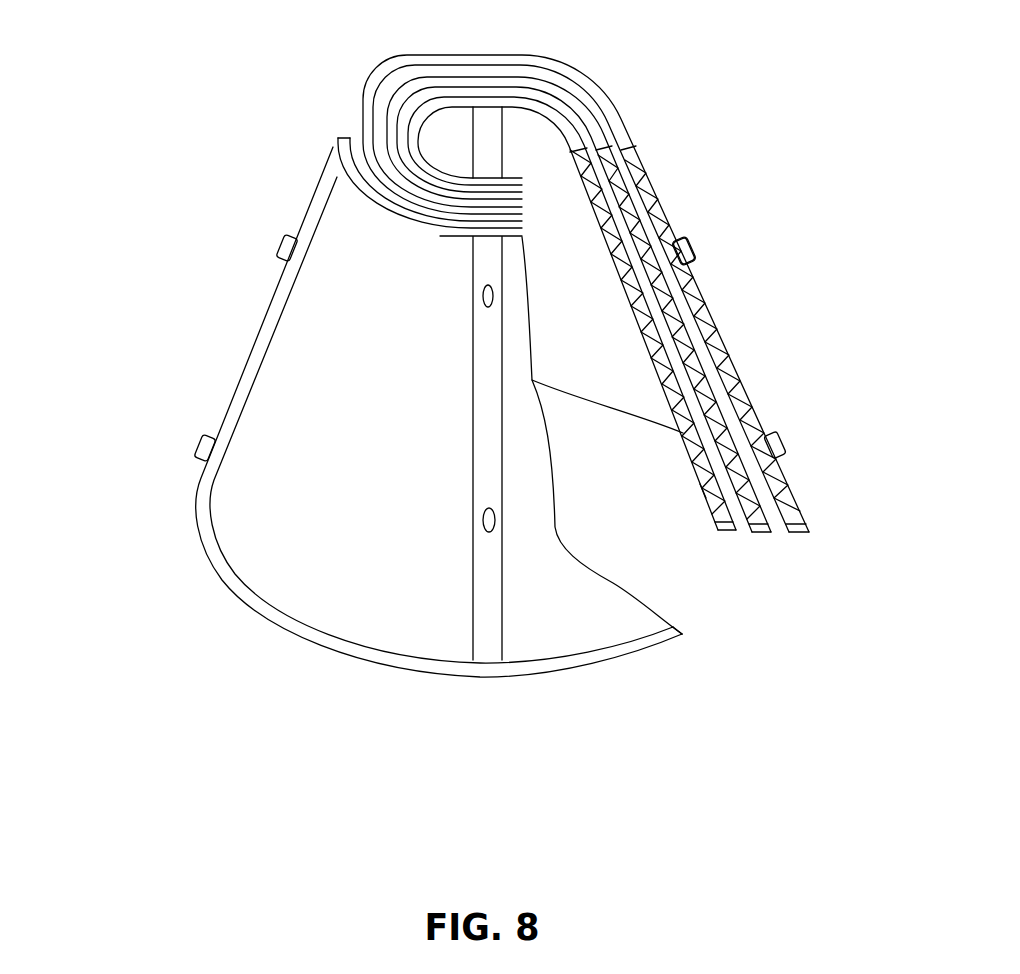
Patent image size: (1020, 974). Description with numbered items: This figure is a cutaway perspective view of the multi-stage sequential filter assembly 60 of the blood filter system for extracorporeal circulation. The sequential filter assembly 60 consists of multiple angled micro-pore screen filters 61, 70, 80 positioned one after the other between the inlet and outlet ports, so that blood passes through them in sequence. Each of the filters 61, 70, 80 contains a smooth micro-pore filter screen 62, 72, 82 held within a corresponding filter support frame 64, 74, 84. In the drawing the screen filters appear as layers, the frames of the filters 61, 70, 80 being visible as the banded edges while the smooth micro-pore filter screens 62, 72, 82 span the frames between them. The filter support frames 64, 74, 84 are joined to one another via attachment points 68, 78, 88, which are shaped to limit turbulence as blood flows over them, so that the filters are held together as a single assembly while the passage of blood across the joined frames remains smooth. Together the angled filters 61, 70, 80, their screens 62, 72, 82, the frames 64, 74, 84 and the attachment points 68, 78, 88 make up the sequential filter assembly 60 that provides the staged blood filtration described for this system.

The multi-stage sequential filter assembly 60 is at (722, 130).
The angled micro-pore screen filter 61 is at (252, 340).
The smooth micro-pore filter screen 62 is at (700, 288).
The filter support frame 64 is at (803, 533).
The attachment point 68 is at (197, 442).
The angled micro-pore screen filter 70 is at (357, 146).
The smooth micro-pore filter screen 72 is at (707, 343).
The filter support frame 74 is at (766, 534).
The attachment point 78 is at (690, 222).
The angled micro-pore screen filter 80 is at (388, 106).
The smooth micro-pore filter screen 82 is at (648, 357).
The filter support frame 84 is at (727, 535).
The attachment point 88 is at (703, 488).